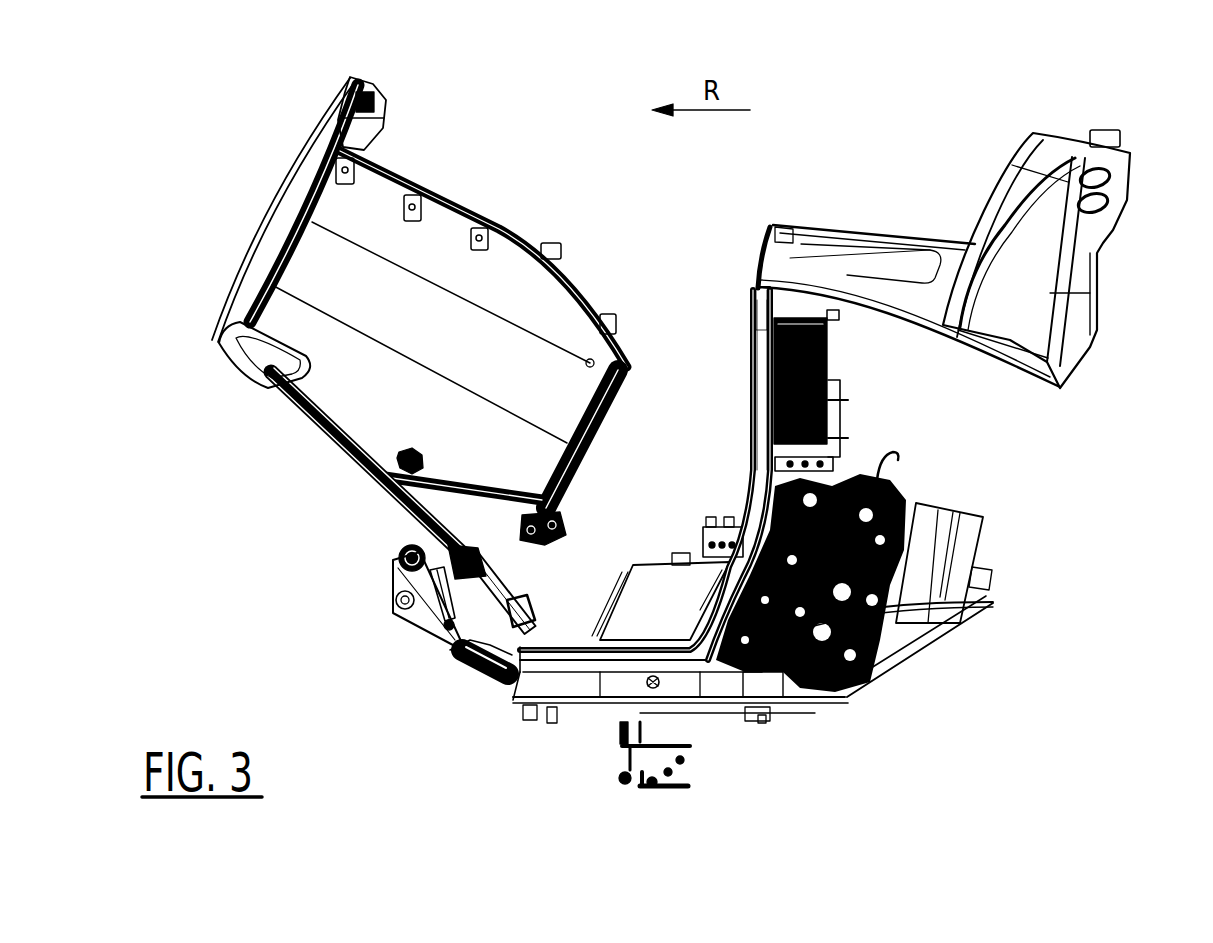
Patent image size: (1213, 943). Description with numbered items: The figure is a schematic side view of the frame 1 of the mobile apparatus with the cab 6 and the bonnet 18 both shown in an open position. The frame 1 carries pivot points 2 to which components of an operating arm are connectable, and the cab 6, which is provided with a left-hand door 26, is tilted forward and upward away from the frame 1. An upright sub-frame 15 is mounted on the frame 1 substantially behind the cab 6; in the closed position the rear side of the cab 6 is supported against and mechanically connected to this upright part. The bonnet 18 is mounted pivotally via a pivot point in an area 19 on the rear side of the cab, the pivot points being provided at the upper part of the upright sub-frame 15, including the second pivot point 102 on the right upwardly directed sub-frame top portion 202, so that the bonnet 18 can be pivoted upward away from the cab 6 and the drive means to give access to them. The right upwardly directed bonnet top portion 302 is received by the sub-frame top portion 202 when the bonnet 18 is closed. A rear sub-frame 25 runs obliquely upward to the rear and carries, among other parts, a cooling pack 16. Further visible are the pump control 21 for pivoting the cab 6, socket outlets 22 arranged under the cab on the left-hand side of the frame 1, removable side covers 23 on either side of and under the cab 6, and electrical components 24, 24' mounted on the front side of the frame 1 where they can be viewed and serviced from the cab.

The frame 1 is at (417, 620).
The pivot point 2 is at (400, 547).
The cab 6 is at (447, 193).
The sub-frame 15 is at (757, 345).
The cooling pack 16 is at (973, 517).
The bonnet 18 is at (1036, 134).
The area 19 is at (760, 242).
The pump control 21 is at (487, 670).
The socket outlet 22 is at (740, 627).
The side cover 23 is at (560, 693).
The electrical components 24 is at (533, 572).
The spring bracket 24' is at (568, 584).
The rear sub-frame 25 is at (913, 640).
The door 26 is at (370, 393).
The second pivot point 102 is at (763, 290).
The right upwardly directed sub-frame top portion 202 is at (748, 294).
The right upwardly directed bonnet top portion 302 is at (850, 283).